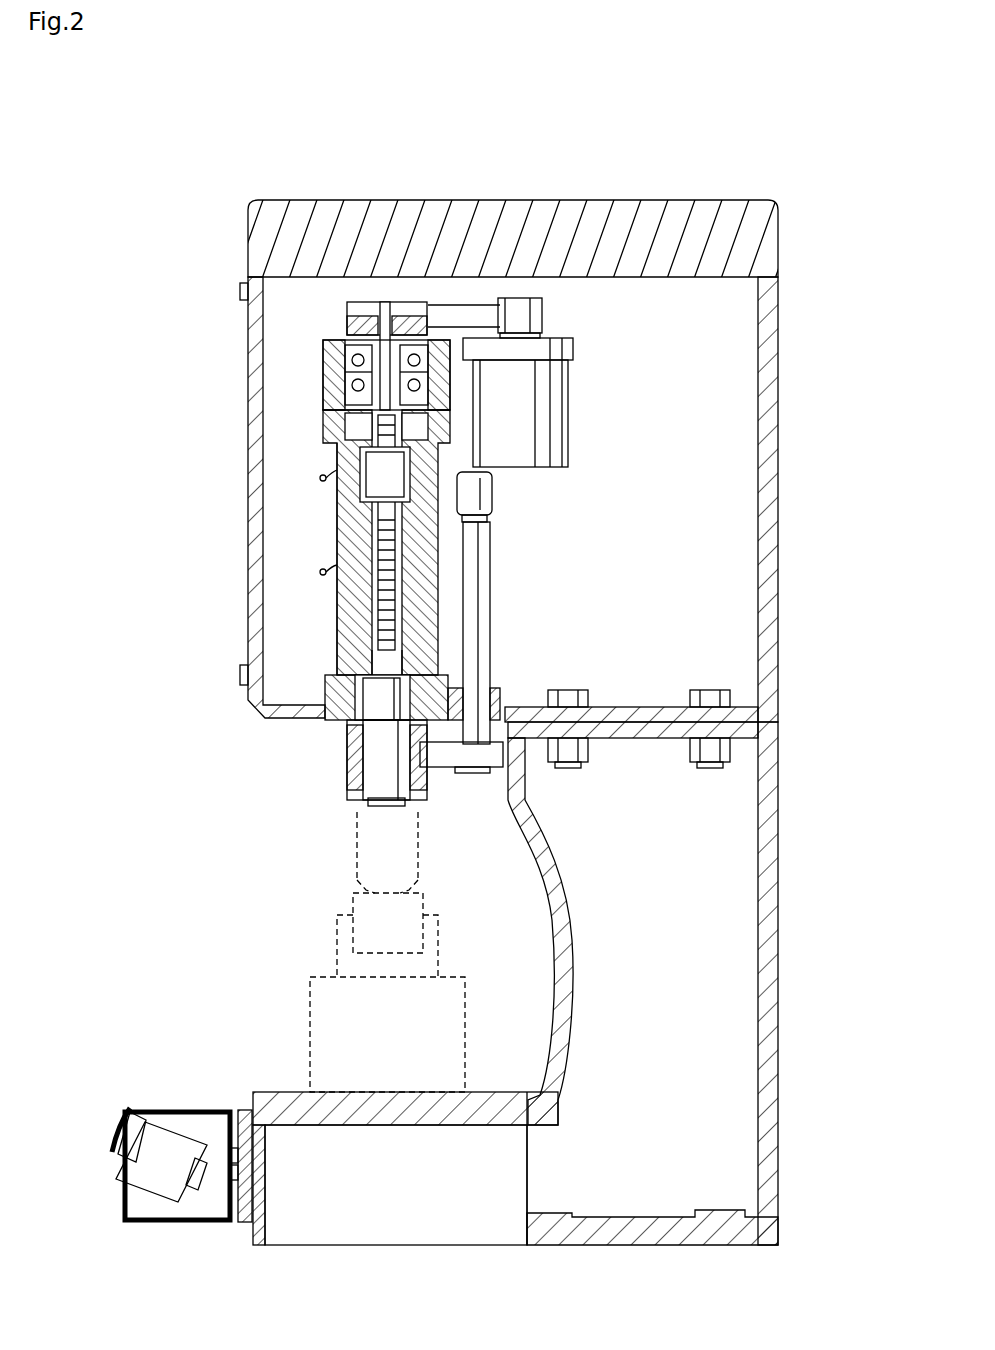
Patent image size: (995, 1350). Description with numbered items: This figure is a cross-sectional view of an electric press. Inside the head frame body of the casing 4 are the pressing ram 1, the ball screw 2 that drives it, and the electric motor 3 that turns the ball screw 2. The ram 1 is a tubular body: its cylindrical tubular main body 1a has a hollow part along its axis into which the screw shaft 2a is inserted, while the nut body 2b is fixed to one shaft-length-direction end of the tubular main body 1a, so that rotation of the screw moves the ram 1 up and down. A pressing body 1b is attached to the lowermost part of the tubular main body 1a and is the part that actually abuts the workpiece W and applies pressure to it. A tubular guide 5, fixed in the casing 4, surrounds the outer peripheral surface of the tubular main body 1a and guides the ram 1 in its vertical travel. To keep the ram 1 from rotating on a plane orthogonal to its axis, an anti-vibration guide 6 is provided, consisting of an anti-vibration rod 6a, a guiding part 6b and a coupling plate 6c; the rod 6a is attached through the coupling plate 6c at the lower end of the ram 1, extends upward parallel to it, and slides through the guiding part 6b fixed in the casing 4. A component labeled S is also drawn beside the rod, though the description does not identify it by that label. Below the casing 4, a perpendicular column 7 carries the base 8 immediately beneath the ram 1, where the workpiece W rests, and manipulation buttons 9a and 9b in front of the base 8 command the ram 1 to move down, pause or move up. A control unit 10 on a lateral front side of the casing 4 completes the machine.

The pressing ram 1 is at (342, 776).
The tubular main body 1a is at (345, 660).
The pressing body 1b is at (378, 806).
The ball screw 2 is at (342, 532).
The screw shaft 2a is at (345, 545).
The nut body 2b is at (345, 466).
The electric motor 3 is at (550, 433).
The casing 4 is at (661, 200).
The tubular guide 5 is at (361, 511).
The anti-vibration guide 6 is at (489, 687).
The anti-vibration rod 6a is at (490, 602).
The guiding part 6b is at (497, 708).
The coupling plate 6c is at (437, 768).
The perpendicular column 7 is at (778, 1012).
The base 8 is at (283, 1092).
The manipulation button 9a is at (182, 1124).
The manipulation button 9b is at (130, 1105).
The control unit 10 is at (248, 497).
The sensor S is at (495, 495).
The workpiece W is at (338, 963).